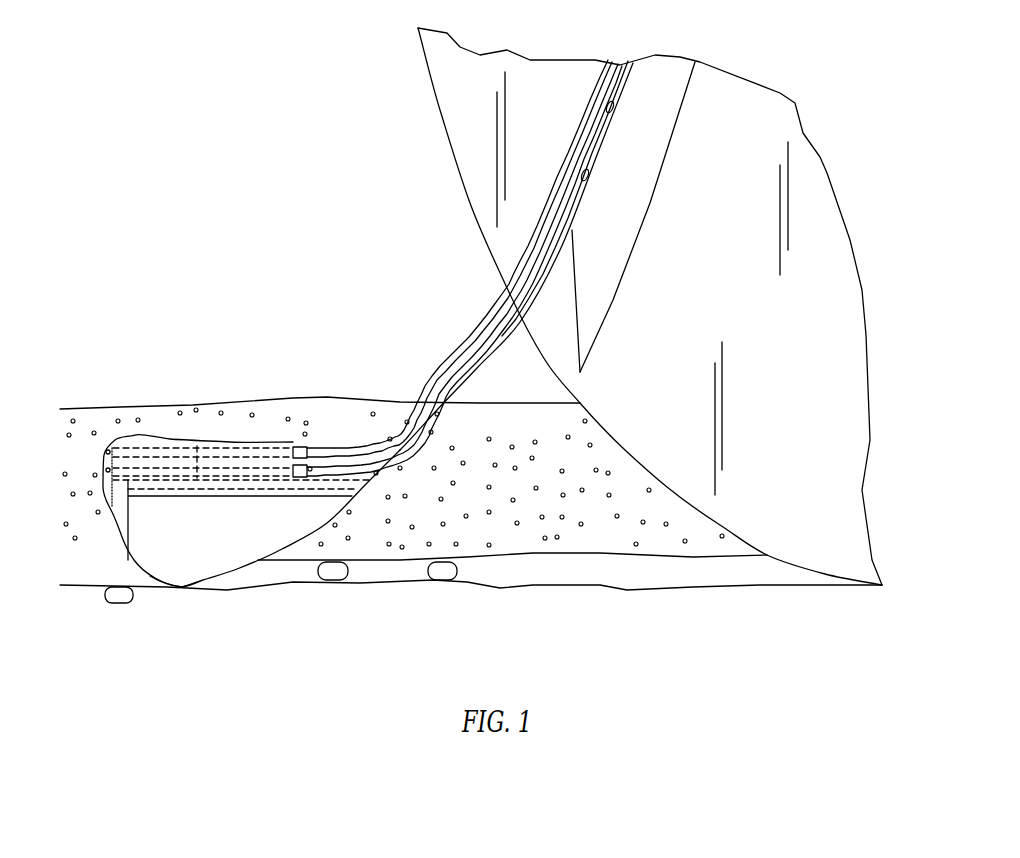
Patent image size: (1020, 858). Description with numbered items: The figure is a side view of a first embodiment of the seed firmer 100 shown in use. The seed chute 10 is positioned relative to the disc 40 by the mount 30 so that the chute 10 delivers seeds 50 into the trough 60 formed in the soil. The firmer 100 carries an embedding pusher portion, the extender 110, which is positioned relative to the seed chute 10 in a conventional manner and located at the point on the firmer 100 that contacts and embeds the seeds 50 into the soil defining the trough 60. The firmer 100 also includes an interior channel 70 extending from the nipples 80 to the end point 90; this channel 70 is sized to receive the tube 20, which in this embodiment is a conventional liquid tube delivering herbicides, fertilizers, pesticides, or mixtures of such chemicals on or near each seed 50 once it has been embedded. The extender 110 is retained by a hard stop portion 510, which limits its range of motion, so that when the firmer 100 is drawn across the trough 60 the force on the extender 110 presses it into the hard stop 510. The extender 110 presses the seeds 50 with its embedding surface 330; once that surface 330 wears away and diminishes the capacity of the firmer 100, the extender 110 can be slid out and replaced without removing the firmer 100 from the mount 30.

The seed chute 10 is at (668, 153).
The tube 20 is at (472, 360).
The mount 30 is at (585, 122).
The disc 40 is at (812, 195).
The seeds 50 is at (107, 598).
The trough 60 is at (705, 594).
The interior channel 70 is at (162, 438).
The nipples 80 is at (296, 444).
The end point 90 is at (98, 455).
The seed firmer 100 is at (231, 618).
The extender 110 is at (203, 587).
The embedding surface 330 is at (173, 588).
The hard stop portion 510 is at (122, 512).